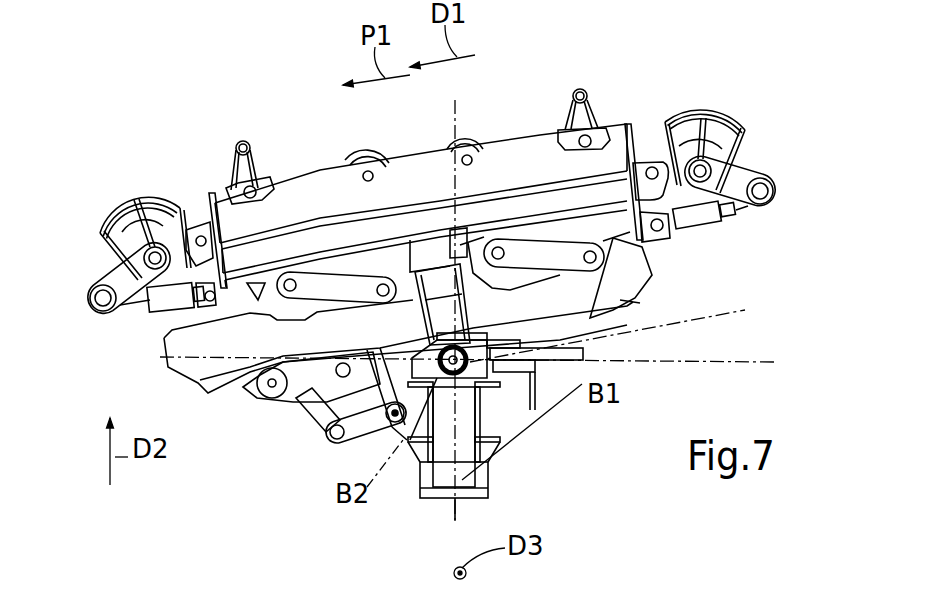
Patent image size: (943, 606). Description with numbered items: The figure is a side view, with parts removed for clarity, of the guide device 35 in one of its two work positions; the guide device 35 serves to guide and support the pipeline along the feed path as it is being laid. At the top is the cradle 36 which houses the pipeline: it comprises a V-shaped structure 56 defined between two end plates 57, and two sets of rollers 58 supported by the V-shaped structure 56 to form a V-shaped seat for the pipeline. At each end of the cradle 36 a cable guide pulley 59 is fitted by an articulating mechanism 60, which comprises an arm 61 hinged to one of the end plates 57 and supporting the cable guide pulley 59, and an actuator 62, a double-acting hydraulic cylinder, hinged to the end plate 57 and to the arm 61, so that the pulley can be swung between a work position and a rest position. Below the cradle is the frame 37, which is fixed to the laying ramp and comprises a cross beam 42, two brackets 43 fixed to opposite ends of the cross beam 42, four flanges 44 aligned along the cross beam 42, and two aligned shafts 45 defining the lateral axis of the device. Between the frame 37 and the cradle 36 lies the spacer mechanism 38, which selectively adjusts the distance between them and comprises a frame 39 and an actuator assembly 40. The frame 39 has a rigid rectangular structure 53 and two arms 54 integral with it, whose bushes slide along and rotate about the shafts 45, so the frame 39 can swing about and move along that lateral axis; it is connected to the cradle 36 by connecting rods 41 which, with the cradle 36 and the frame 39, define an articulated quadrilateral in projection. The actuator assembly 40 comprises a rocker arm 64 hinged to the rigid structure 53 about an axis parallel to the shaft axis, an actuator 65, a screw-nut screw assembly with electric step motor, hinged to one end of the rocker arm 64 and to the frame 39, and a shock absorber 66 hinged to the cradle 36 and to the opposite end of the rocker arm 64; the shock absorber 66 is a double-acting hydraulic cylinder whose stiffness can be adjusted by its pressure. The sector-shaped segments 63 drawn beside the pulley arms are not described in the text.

The guide device 35 is at (690, 78).
The cradle 36 is at (522, 128).
The frame 37 is at (445, 503).
The spacer mechanism 38 is at (655, 292).
The frame 39 is at (642, 302).
The actuator assembly 40 is at (318, 455).
The connecting rods 41 is at (323, 292).
The cross beam 42 is at (482, 485).
The brackets 43 is at (477, 422).
The flanges 44 is at (477, 413).
The shafts 45 is at (415, 450).
The rigid rectangular structure 53 is at (632, 275).
The arms 54 is at (453, 318).
The V-shaped structure 56 is at (440, 166).
The end plates 57 is at (212, 208).
The rollers 58 is at (266, 176).
The cable guide pulleys 59 is at (82, 293).
The articulating mechanism 60 is at (140, 322).
The arm 61 is at (120, 278).
The actuator 62 is at (168, 303).
The sector segment 63 is at (150, 198).
The rocker arm 64 is at (350, 440).
The actuator 65 is at (272, 398).
The shock absorber 66 is at (432, 250).